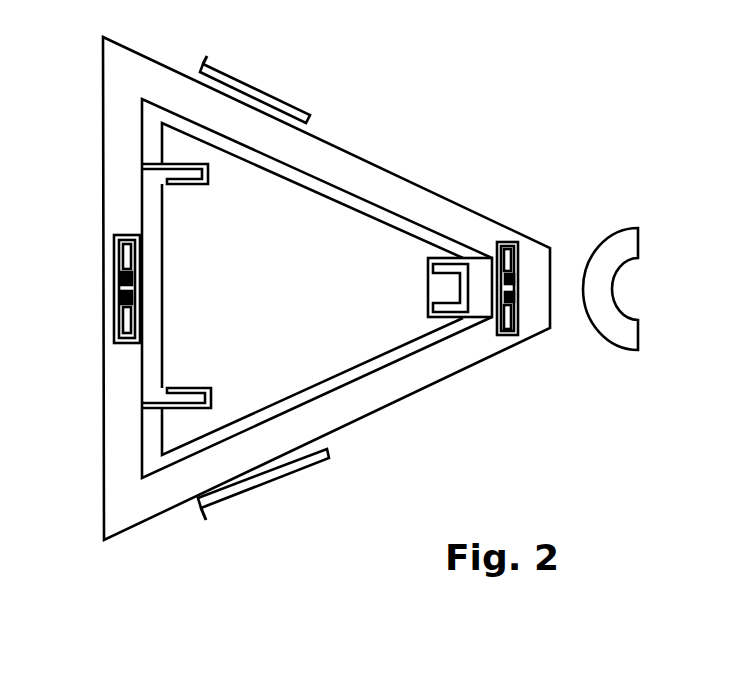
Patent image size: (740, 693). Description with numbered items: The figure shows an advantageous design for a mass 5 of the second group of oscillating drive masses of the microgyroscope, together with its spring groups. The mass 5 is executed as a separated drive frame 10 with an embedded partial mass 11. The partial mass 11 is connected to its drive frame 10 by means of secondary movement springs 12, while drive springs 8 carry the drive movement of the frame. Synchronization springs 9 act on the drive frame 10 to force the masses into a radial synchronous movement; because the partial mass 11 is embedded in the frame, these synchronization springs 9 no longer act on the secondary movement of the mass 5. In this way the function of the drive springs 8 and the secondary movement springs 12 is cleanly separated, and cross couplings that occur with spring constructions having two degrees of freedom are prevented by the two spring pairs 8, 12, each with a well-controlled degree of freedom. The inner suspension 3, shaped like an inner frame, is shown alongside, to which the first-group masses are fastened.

The inner suspension 3 is at (612, 327).
The oscillating drive masses of the second group 5 is at (414, 130).
The drive springs 8 is at (122, 255).
The synchronization springs 9 is at (243, 81).
The drive frame 10 is at (347, 173).
The partial masses 11 is at (396, 257).
The secondary movement springs 12 is at (150, 406).